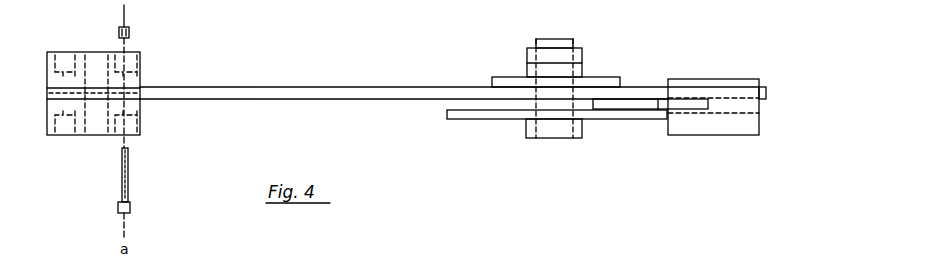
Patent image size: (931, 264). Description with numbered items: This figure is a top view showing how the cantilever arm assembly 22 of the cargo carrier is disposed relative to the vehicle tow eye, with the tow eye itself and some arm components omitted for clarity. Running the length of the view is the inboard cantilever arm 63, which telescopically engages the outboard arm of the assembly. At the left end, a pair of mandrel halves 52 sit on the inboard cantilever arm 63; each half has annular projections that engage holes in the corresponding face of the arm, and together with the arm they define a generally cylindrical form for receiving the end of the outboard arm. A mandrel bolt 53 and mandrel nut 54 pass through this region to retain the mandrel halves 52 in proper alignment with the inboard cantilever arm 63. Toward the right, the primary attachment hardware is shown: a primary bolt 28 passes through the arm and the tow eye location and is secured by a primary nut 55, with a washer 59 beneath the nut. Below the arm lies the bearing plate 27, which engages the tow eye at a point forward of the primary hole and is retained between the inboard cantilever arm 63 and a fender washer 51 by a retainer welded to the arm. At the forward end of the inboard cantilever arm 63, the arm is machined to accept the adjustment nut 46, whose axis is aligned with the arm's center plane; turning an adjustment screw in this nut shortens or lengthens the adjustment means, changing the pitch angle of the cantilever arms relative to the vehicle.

The cantilever arm assembly 22 is at (413, 93).
The bearing plate 27 is at (612, 105).
The primary bolt 28 is at (540, 128).
The adjustment nut 46 is at (683, 125).
The fender washer 51 is at (461, 119).
The mandrel half 52 is at (137, 78).
The mandrel bolt 53 is at (132, 208).
The mandrel nut 54 is at (132, 32).
The primary nut 55 is at (574, 70).
The washer 59 is at (613, 80).
The inboard cantilever arm 63 is at (274, 88).